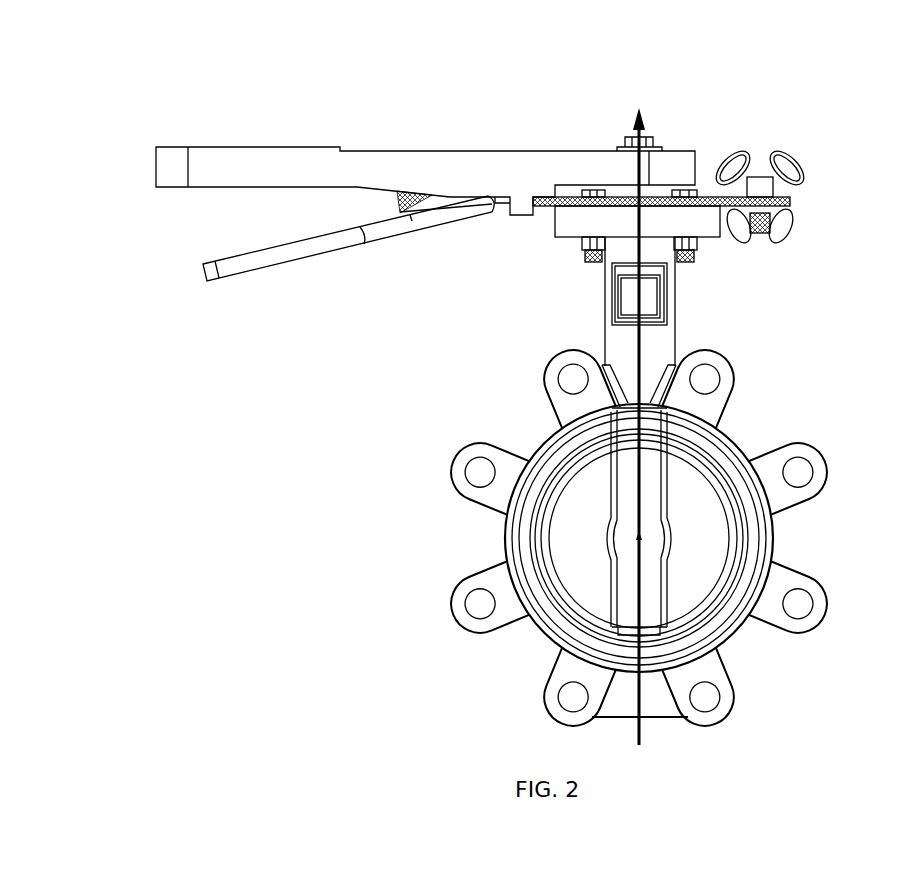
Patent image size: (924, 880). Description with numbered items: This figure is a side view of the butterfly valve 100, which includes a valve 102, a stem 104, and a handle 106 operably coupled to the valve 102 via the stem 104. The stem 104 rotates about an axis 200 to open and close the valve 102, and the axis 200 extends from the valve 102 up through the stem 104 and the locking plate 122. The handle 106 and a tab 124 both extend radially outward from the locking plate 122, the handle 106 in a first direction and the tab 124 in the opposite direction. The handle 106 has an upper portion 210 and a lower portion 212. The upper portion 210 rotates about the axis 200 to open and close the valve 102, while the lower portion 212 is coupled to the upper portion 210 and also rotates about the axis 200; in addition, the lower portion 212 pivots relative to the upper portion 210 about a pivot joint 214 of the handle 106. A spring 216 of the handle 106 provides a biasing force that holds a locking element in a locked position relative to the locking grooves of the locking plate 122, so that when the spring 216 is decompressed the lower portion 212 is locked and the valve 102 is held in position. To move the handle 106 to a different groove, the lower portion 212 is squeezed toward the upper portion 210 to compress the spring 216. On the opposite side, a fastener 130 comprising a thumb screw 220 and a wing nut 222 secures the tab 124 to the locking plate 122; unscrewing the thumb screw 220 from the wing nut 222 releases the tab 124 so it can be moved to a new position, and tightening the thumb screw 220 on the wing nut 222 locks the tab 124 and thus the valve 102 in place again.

The butterfly valve 100 is at (108, 348).
The valve 102 is at (627, 510).
The stem 104 is at (612, 338).
The handle 106 is at (164, 161).
The locking plate 122 is at (790, 207).
The tab 124 is at (700, 197).
The fastener 130 is at (816, 160).
The axis 200 is at (641, 348).
The upper portion 210 is at (297, 186).
The lower portion 212 is at (250, 262).
The pivot joint 214 is at (495, 210).
The spring 216 is at (398, 207).
The thumb screw 220 is at (792, 238).
The wing nut 222 is at (790, 172).